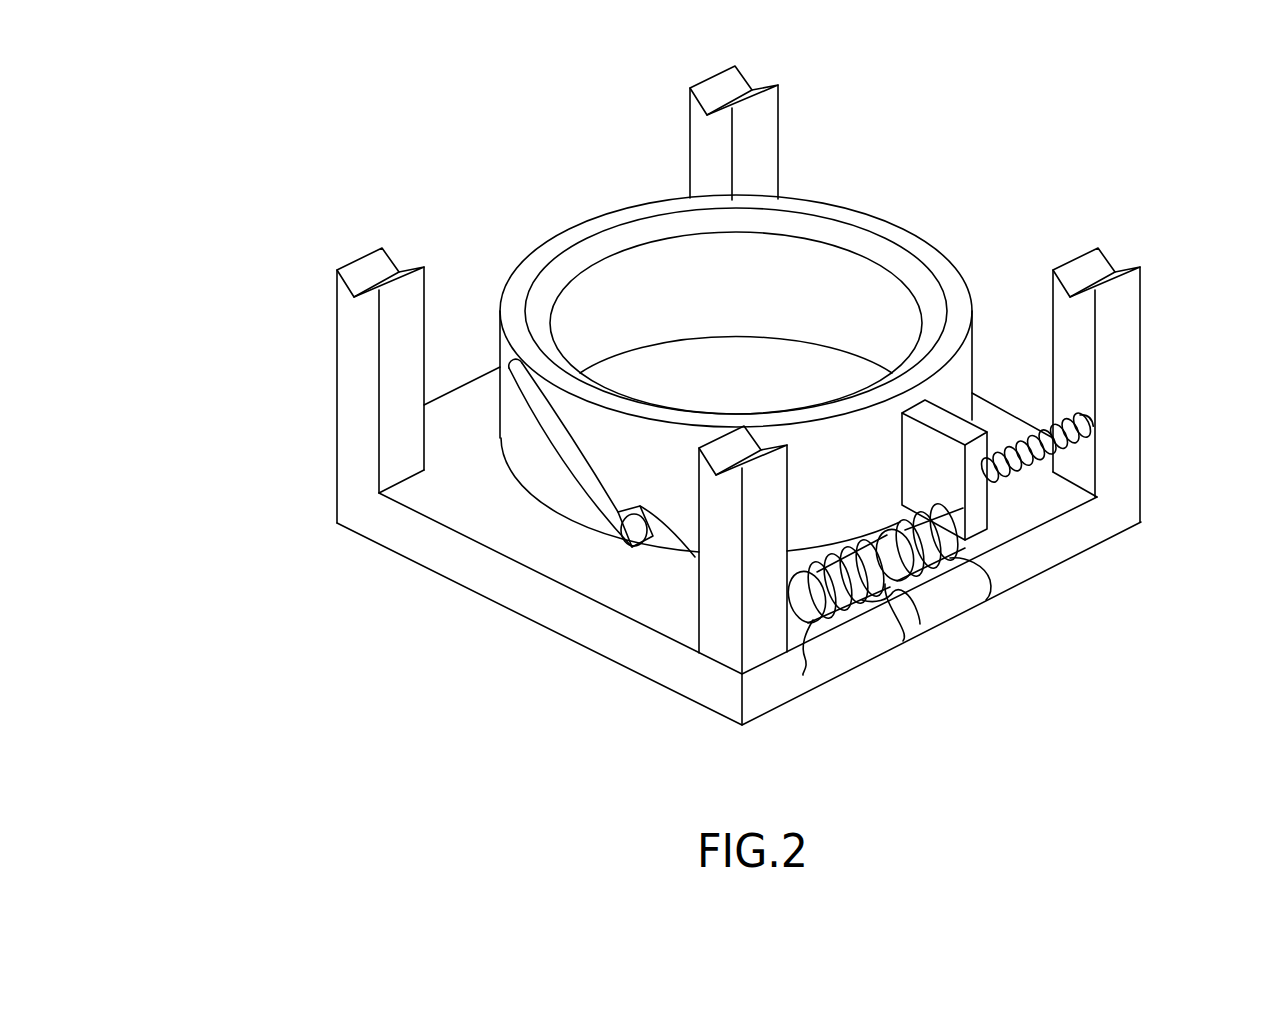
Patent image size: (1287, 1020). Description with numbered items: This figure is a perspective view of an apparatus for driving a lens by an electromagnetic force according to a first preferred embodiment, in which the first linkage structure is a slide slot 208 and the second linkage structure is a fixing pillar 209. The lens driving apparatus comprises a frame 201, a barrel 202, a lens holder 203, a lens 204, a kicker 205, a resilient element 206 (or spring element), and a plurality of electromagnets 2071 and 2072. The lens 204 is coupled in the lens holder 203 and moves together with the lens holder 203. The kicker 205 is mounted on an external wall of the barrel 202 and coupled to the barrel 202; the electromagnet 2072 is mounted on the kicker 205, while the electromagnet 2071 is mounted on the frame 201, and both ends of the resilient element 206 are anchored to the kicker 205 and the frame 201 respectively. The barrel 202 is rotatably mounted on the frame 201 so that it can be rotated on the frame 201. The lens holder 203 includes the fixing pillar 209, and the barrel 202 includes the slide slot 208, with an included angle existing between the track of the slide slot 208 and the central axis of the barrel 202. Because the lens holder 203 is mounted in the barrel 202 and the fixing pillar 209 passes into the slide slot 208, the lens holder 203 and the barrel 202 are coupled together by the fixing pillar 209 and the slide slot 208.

The frame 201 is at (352, 367).
The barrel 202 is at (622, 212).
The lens holder 203 is at (808, 248).
The lens 204 is at (687, 357).
The kicker 205 is at (978, 535).
The resilient element 206 is at (1083, 440).
The electromagnet 2071 is at (865, 607).
The electromagnet 2072 is at (943, 540).
The slide slot 208 is at (597, 493).
The fixing pillar 209 is at (630, 532).